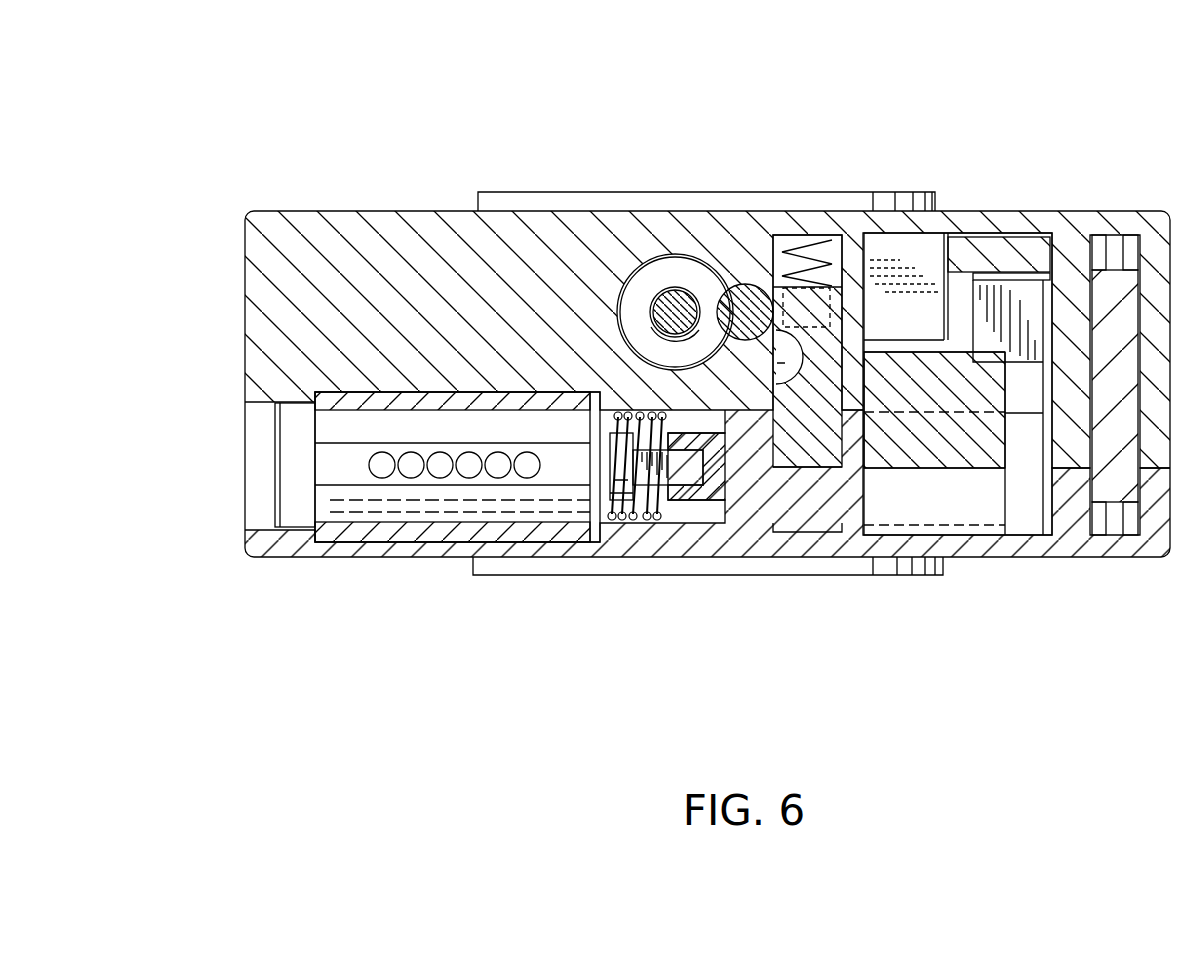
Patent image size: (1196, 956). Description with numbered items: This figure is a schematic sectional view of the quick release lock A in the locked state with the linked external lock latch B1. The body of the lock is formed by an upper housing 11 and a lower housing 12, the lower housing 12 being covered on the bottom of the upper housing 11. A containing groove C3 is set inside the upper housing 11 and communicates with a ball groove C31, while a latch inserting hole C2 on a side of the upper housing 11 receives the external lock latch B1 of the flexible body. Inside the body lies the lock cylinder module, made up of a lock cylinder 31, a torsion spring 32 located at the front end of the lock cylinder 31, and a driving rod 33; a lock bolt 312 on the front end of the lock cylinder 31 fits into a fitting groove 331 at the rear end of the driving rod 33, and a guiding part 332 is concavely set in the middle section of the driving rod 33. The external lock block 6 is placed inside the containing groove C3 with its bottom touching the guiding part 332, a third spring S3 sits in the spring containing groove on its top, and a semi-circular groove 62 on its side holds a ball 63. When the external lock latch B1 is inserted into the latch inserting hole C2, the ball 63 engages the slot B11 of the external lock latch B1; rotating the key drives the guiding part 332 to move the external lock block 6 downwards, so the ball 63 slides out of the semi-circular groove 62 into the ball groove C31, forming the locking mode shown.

The upper housing 11 is at (352, 232).
The lower housing 12 is at (970, 548).
The lock cylinder 31 is at (405, 505).
The torsion spring 32 is at (628, 500).
The lock bolt 312 is at (673, 487).
The fitting groove 331 is at (703, 487).
The driving rod 33 is at (798, 502).
The guiding part 332 is at (820, 443).
The external lock block 6 is at (843, 460).
The semi-circular groove 62 is at (783, 363).
The ball 63 is at (745, 285).
The external lock latch B1 is at (617, 325).
The slot B11 is at (678, 277).
The latch inserting hole C2 is at (658, 314).
The containing groove C3 is at (862, 340).
The ball groove C31 is at (755, 287).
The third spring S3 is at (800, 285).
The quick release lock A is at (862, 146).